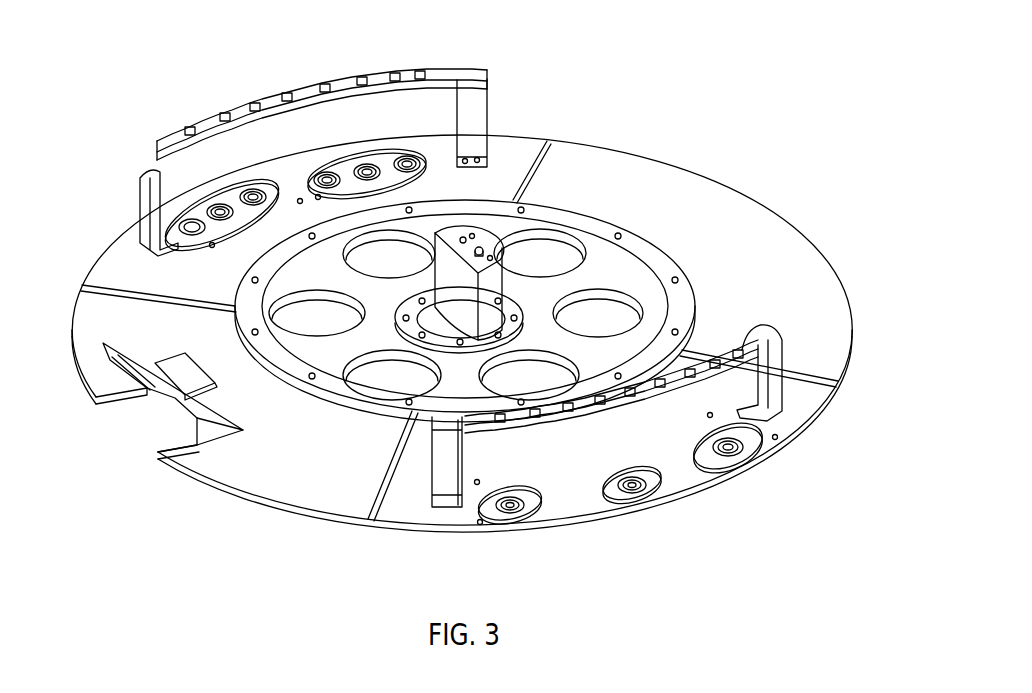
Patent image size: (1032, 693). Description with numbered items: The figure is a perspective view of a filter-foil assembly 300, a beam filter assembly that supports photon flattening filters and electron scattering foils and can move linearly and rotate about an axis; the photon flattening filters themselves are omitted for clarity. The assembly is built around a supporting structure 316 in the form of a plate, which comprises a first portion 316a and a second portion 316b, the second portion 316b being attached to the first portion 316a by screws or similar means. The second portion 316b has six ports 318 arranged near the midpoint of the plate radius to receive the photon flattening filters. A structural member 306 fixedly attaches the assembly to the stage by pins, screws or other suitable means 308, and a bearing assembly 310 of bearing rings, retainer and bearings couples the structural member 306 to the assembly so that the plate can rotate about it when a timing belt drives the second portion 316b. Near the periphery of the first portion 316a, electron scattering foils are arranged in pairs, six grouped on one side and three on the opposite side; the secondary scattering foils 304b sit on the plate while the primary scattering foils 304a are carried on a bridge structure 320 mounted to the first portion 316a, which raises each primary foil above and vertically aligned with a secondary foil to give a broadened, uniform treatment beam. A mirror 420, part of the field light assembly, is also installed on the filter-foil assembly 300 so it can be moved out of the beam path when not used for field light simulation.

The filter-foil assembly 300 is at (687, 25).
The primary scattering foils 304a is at (255, 105).
The secondary scattering foils 304b is at (253, 195).
The structural member 306 is at (492, 282).
The pins, screws or other suitable means 308 is at (479, 246).
The bearing assembly 310 is at (450, 337).
The supporting structure 316 is at (794, 261).
The first portion 316a is at (718, 200).
The second portion 316b is at (616, 255).
The ports 318 is at (320, 318).
The bridge structure 320 is at (440, 70).
The mirror 420 is at (152, 393).